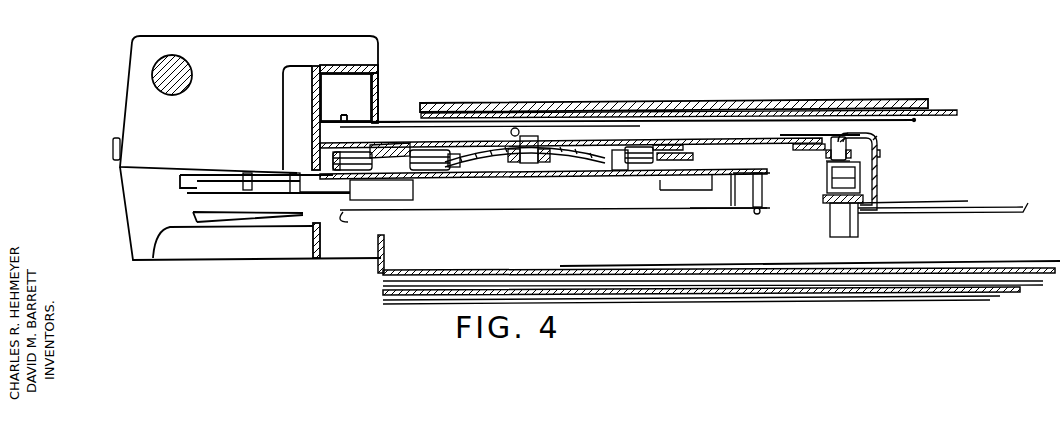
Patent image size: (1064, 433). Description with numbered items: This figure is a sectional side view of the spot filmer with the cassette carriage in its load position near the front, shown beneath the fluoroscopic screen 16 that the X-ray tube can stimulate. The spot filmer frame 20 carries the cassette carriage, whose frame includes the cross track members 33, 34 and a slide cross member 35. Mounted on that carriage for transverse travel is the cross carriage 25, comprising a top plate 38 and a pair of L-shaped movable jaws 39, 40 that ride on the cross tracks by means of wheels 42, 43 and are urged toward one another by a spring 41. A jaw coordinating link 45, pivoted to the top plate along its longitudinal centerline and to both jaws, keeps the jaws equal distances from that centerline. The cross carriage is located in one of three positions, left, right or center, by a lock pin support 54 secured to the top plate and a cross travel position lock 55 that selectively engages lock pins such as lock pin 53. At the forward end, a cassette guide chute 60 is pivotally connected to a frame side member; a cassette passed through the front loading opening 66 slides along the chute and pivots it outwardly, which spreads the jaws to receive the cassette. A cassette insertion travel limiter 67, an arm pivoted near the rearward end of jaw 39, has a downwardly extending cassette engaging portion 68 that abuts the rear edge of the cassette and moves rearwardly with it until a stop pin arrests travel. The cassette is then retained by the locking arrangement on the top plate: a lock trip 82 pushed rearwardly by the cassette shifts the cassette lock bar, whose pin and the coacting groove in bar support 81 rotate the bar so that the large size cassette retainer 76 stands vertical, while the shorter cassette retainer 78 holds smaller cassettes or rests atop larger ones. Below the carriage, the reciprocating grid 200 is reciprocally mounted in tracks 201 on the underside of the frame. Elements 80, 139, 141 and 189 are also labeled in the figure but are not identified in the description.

The fluoroscopic screen 16 is at (667, 104).
The spot filmer frame 20 is at (375, 283).
The cross carriage 25 is at (693, 138).
The frame cross track member 33 is at (408, 165).
The frame cross track member 34 is at (692, 159).
The slide cross member 35 is at (881, 164).
The top plate 38 is at (573, 142).
The movable jaw 39 is at (612, 170).
The movable jaw 40 is at (468, 180).
The spring 41 is at (513, 128).
The wheels 42 is at (631, 147).
The wheels 43 is at (420, 150).
The jaw coordinating link 45 is at (560, 158).
The lock pin 53 is at (852, 135).
The lock pin support 54 is at (830, 161).
The cross travel position lock 55 is at (812, 143).
The cassette guide chute 60 is at (197, 200).
The front loading opening 66 is at (142, 204).
The cassette insertion travel limiter 67 is at (768, 166).
The cassette engaging portion 68 is at (663, 194).
The large size cassette retainer 76 is at (246, 172).
The shorter cassette retainer 78 is at (295, 172).
The knob 80 is at (113, 149).
The bar support 81 is at (453, 135).
The lock trip 82 is at (556, 142).
The support plate 139 is at (1012, 210).
The solenoid housing 141 is at (837, 183).
The cap 189 is at (855, 228).
The reciprocating grid 200 is at (587, 271).
The tracks 201 is at (407, 282).